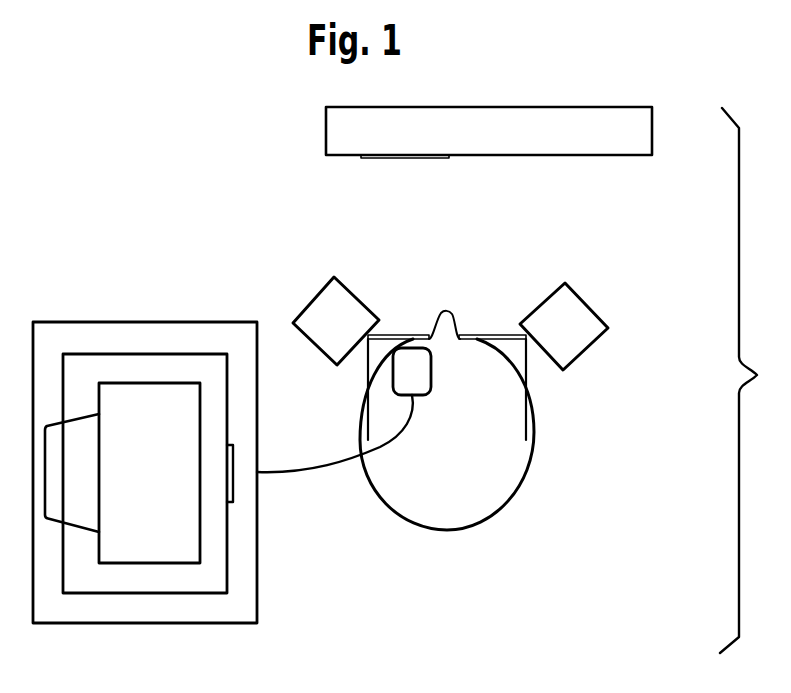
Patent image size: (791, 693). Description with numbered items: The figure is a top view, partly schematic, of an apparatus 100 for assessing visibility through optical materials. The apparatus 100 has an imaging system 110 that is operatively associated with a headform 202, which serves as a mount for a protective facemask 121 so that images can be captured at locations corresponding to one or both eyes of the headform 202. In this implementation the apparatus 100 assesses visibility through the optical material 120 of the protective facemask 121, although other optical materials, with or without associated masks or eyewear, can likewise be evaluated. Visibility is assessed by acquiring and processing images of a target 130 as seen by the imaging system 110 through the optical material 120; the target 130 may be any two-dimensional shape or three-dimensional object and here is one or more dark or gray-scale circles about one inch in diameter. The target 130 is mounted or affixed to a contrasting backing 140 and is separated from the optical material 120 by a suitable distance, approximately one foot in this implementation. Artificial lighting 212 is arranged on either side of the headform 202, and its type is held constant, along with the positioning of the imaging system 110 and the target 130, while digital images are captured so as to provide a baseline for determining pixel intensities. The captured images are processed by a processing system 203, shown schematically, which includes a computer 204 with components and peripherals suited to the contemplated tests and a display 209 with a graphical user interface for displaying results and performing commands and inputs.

The apparatus 100 is at (539, 616).
The imaging system 110 is at (394, 392).
The optical material 120 is at (425, 333).
The protective facemask 121 is at (518, 420).
The target 130 is at (390, 158).
The contrasting backing 140 is at (586, 100).
The headform 202 is at (543, 464).
The processing system 203 is at (93, 322).
The computer 204 is at (191, 354).
The display 209 is at (185, 529).
The artificial lighting 212 is at (318, 293).